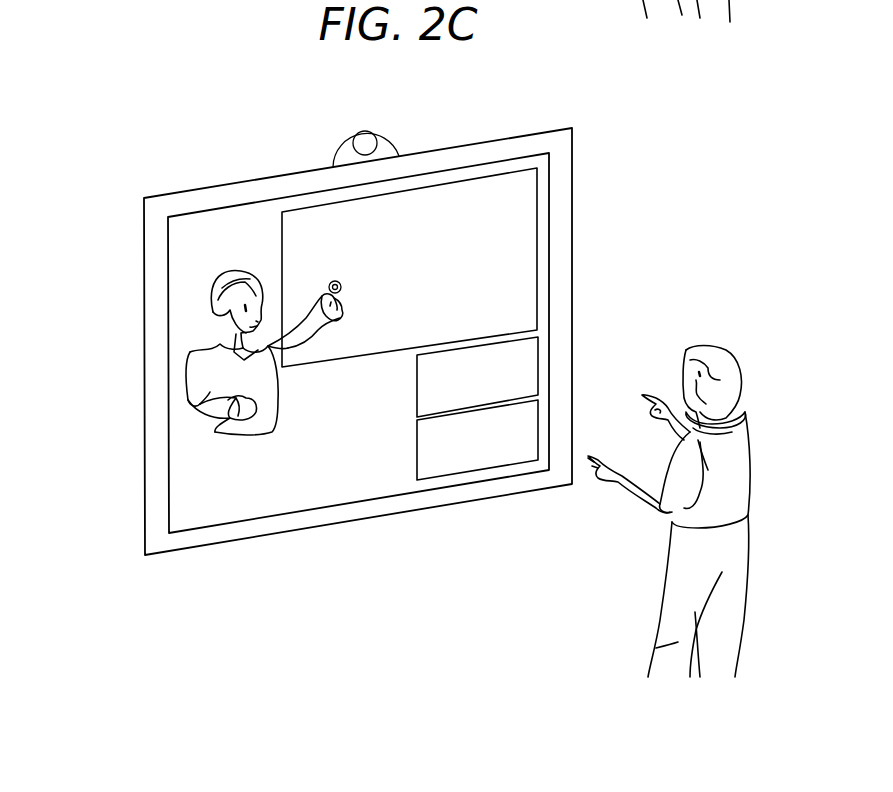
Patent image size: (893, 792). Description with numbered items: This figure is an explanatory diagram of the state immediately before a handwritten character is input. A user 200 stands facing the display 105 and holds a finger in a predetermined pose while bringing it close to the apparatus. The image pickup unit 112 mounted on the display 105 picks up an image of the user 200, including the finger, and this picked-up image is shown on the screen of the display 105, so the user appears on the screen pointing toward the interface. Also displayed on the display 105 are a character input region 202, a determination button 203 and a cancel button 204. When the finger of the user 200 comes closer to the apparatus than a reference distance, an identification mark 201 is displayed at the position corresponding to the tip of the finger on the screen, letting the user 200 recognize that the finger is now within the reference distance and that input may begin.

The display 105 is at (168, 281).
The image pickup unit 112 is at (361, 138).
The user 200 is at (720, 336).
The identification mark 201 is at (333, 281).
The character input region 202 is at (520, 206).
The determination button 203 is at (526, 358).
The cancel button 204 is at (472, 465).